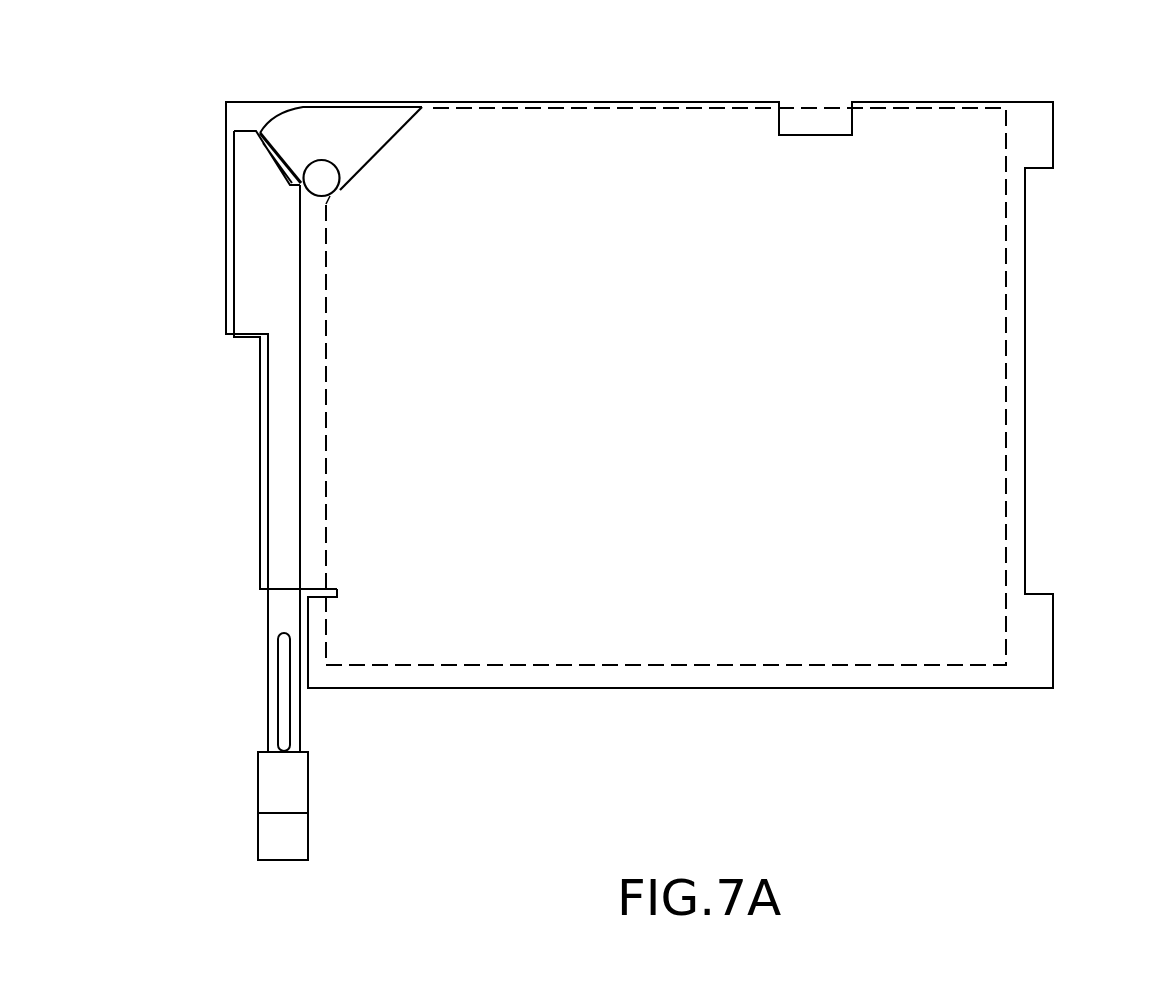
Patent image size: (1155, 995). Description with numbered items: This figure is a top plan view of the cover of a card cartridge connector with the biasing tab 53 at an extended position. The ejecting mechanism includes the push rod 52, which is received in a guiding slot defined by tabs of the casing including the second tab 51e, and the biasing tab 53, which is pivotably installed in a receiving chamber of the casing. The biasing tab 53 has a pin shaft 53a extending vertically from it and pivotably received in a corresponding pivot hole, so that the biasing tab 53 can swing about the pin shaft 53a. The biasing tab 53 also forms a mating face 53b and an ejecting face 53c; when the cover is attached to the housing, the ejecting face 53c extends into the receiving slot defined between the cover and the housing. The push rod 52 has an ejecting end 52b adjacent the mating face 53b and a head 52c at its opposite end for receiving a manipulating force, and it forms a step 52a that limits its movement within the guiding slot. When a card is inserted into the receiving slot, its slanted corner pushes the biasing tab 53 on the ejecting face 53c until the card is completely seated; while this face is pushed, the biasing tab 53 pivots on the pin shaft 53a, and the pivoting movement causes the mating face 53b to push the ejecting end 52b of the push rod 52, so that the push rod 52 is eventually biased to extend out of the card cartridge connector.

The second tab 51e is at (280, 590).
The push rod 52 is at (278, 452).
The step 52a is at (245, 340).
The ejecting end 52b is at (287, 163).
The head 52c is at (290, 837).
The biasing tab 53 is at (350, 128).
The pin shaft 53a is at (320, 175).
The mating face 53b is at (267, 147).
The ejecting face 53c is at (383, 148).